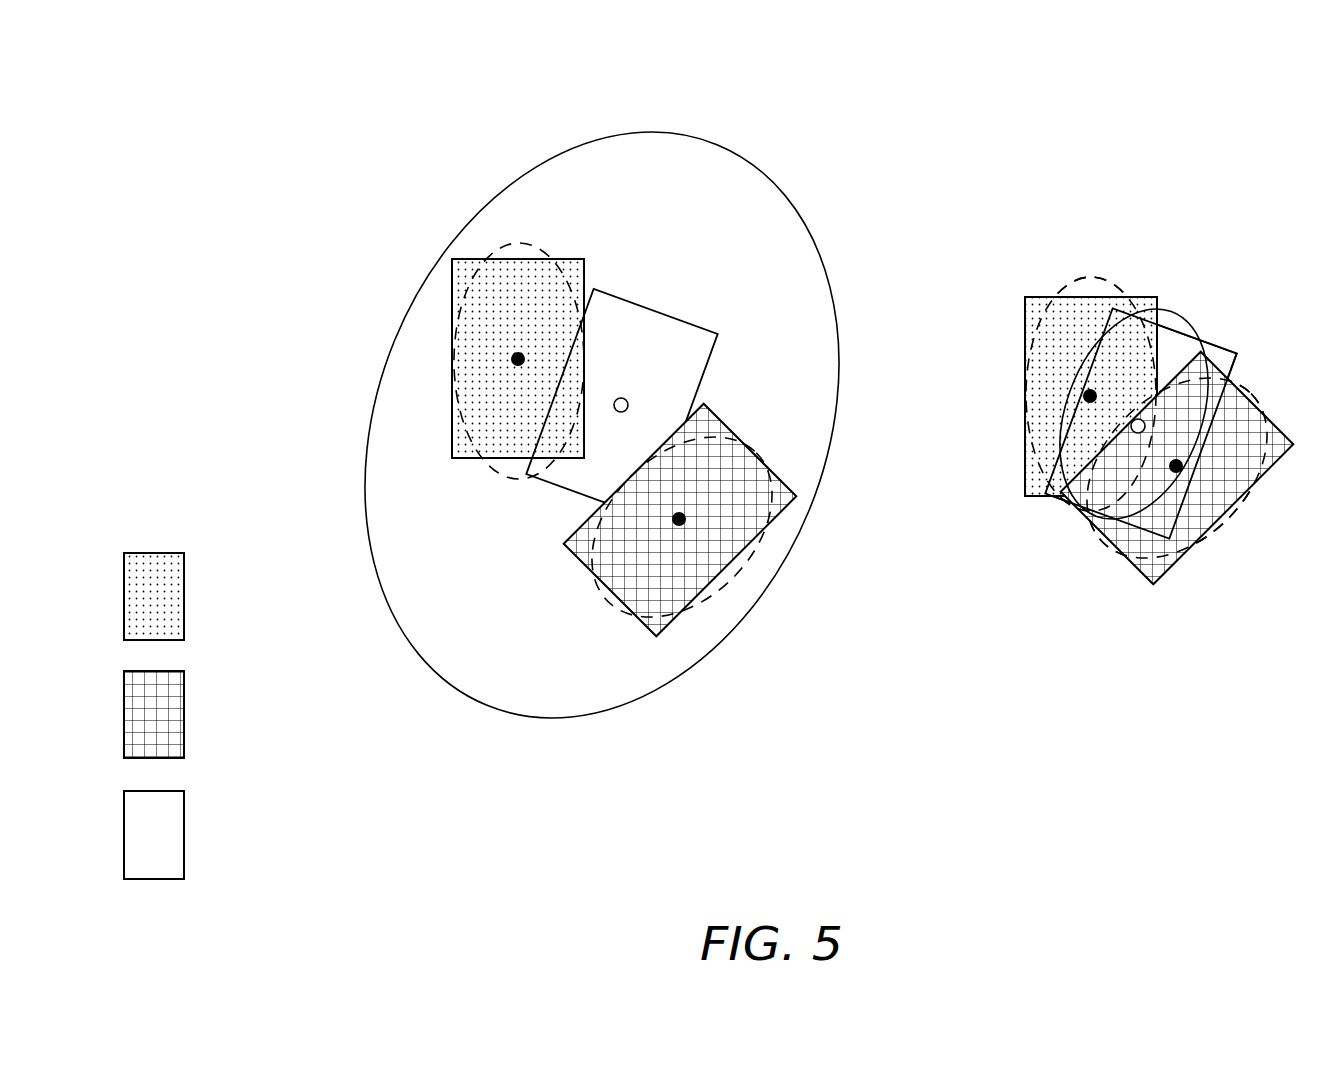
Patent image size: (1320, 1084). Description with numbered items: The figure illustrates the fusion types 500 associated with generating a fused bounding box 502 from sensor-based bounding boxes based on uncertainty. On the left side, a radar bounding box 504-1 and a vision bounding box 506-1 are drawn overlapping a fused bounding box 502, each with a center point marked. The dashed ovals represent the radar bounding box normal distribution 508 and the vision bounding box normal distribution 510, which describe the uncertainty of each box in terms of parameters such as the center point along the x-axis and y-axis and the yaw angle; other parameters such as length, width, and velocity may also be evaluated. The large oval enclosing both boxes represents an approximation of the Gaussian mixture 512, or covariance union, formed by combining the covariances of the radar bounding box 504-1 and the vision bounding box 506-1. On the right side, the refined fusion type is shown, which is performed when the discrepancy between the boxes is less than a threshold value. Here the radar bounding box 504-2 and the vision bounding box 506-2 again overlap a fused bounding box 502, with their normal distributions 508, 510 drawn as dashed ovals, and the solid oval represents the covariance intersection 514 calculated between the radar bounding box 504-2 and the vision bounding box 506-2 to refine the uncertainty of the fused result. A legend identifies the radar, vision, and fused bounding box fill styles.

The sensor fusion bounding box scenario 500 is at (175, 82).
The fused bounding box 502 is at (651, 309).
The radar bounding box 504-1 is at (688, 606).
The radar bounding box 504-2 is at (1160, 572).
The vision bounding box 506-1 is at (452, 275).
The vision bounding box 506-2 is at (1023, 320).
The radar bounding box normal distribution 508 is at (598, 604).
The vision bounding box normal distribution 510 is at (518, 479).
The Gaussian mixture 512 is at (533, 717).
The covariance intersection 514 is at (1177, 310).